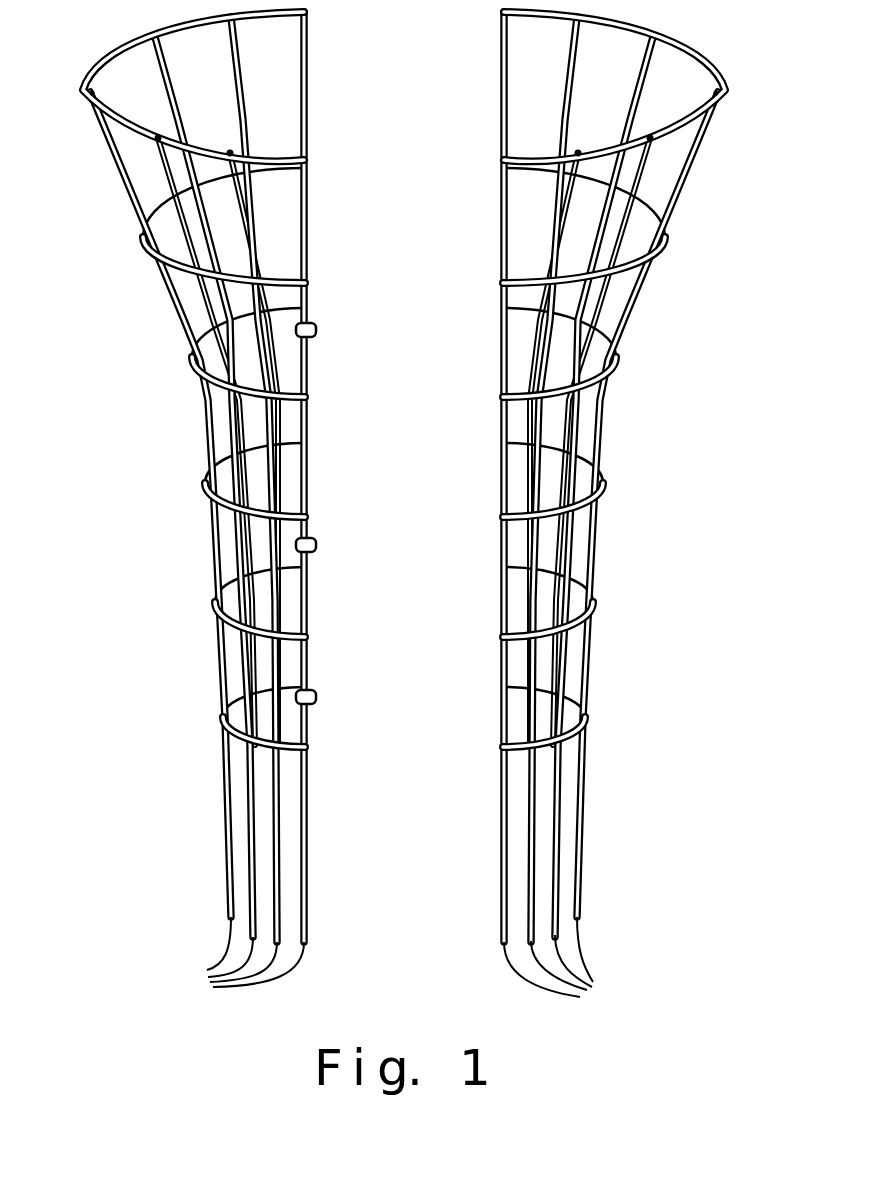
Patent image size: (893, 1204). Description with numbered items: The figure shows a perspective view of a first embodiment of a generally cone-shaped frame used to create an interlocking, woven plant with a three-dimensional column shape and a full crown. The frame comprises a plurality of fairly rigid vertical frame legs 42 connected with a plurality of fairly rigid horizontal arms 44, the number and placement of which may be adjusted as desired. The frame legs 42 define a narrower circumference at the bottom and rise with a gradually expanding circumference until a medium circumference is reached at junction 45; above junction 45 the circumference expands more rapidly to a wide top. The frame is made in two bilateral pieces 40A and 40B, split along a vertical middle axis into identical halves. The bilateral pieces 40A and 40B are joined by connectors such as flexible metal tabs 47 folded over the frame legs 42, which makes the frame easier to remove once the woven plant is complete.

The bilateral piece 40A is at (250, 477).
The bilateral piece 40B is at (629, 477).
The frame legs 42 is at (398, 967).
The horizontal arms 44 is at (605, 483).
The junction 45 is at (616, 362).
The flexible metal tabs 47 is at (317, 331).